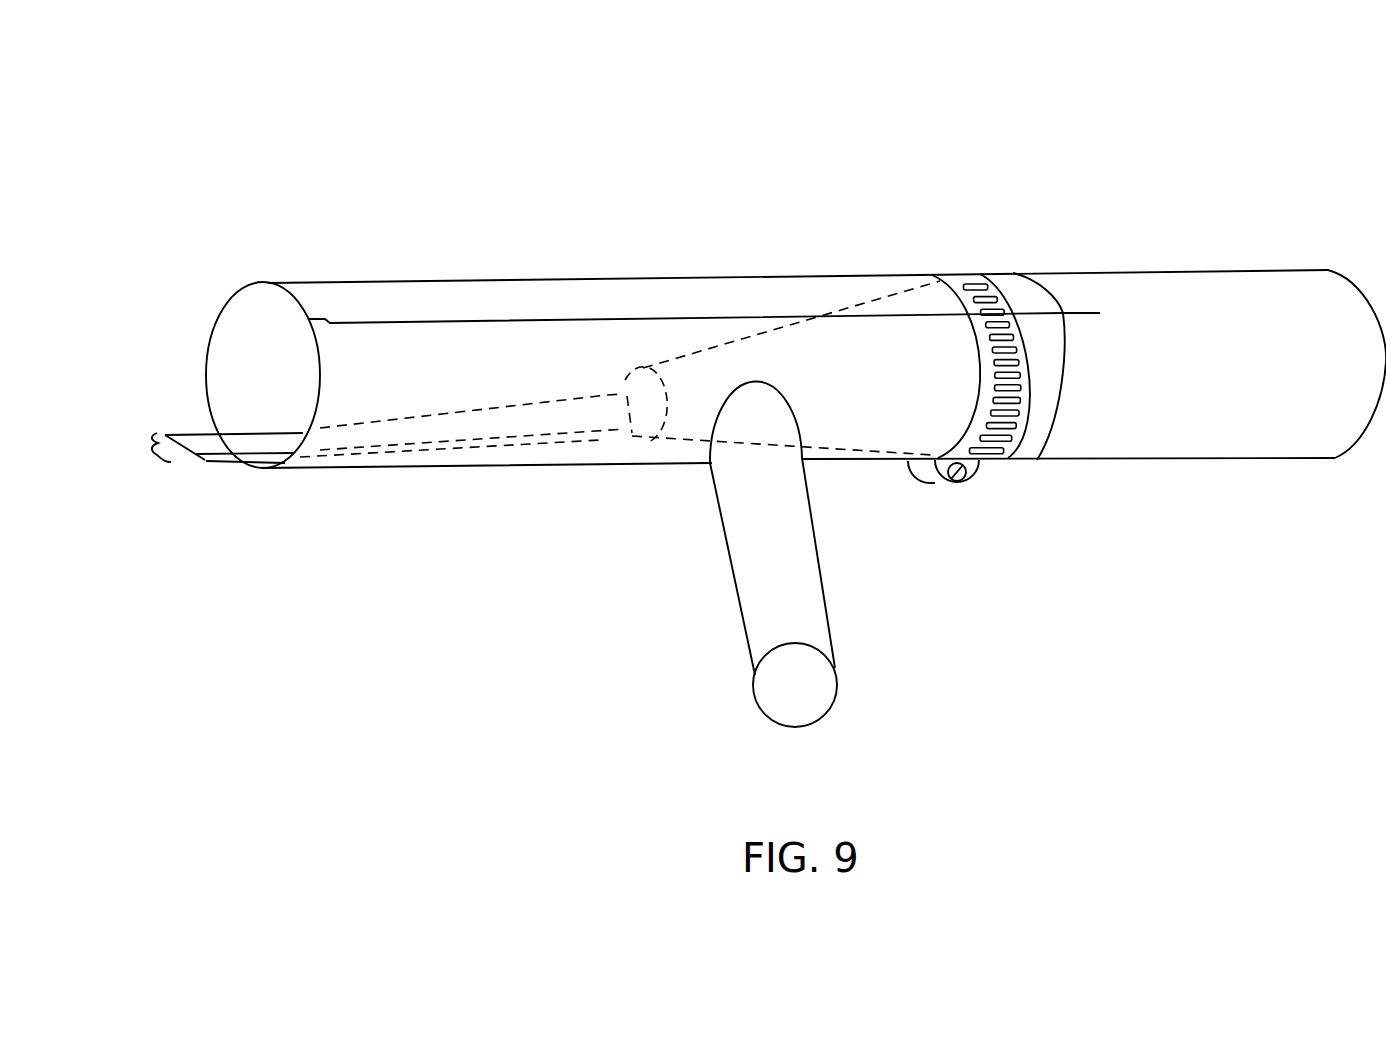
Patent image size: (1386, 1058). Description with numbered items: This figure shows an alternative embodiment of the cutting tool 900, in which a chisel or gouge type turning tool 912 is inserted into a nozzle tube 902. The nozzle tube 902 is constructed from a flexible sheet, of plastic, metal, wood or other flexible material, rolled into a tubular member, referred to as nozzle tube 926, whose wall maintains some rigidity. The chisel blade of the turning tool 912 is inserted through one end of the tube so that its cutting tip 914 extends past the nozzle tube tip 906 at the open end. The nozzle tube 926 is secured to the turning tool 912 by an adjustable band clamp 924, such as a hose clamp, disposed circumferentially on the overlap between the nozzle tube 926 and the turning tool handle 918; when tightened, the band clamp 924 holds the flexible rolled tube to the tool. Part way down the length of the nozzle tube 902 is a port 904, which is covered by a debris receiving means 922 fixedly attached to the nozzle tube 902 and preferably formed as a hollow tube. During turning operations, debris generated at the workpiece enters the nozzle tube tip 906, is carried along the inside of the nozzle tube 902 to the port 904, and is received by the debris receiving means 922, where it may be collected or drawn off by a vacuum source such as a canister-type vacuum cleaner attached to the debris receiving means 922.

The cutting tool 900 is at (845, 76).
The nozzle tube 902 is at (423, 302).
The port 904 is at (728, 453).
The nozzle tube tip 906 is at (256, 286).
The turning tool 912 is at (215, 438).
The cutting tip 914 is at (147, 450).
The turning tool handle 918 is at (1173, 305).
The debris receiving means 922 is at (763, 592).
The adjustable band clamp 924 is at (955, 483).
The nozzle tube 926 is at (1010, 283).